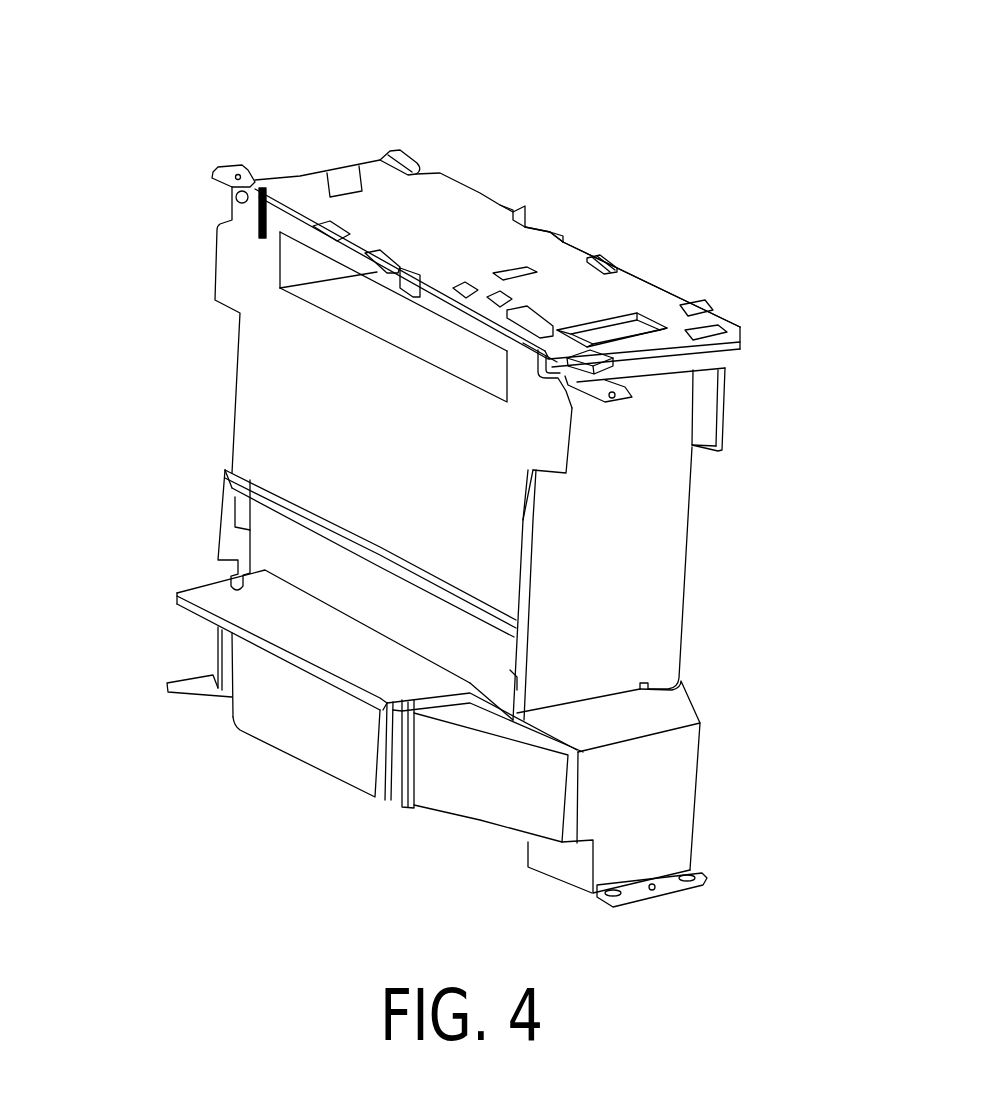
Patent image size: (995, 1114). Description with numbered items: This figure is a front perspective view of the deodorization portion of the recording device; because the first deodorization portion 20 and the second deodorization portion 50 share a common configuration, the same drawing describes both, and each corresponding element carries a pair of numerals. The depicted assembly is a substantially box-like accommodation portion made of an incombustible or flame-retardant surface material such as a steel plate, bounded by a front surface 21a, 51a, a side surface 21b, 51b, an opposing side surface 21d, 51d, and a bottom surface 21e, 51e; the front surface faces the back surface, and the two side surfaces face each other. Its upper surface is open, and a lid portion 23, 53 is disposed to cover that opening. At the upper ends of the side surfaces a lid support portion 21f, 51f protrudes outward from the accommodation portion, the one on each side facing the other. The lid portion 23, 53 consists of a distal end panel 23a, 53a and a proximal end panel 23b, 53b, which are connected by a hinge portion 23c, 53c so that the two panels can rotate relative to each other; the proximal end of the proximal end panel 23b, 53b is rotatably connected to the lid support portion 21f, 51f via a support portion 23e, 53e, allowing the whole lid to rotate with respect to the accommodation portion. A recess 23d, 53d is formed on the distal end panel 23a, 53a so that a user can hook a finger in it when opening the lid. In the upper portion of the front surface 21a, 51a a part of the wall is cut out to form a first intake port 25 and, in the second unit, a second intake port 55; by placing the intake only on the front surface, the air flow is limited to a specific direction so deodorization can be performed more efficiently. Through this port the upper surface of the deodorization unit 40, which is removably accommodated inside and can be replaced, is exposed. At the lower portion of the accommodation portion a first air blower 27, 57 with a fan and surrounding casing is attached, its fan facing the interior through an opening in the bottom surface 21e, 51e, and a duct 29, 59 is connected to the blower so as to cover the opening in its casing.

The first deodorization portion 20 is at (461, 454).
The second deodorization portion 50 is at (220, 126).
The front surface 21a is at (317, 453).
The front surface 51a is at (260, 400).
The side surface 21b is at (687, 540).
The side surface 51b is at (667, 480).
The side surface 21d is at (154, 565).
The side surface 51d is at (232, 445).
The bottom surface 21e is at (752, 713).
The bottom surface 51e is at (677, 694).
The lid support portion 21f is at (299, 156).
The lid support portion 51f is at (258, 187).
The lid portion 23 is at (522, 204).
The lid portion 53 is at (790, 44).
The distal end panel 23a is at (677, 188).
The distal end panel 53a is at (637, 267).
The proximal end panel 23b is at (566, 138).
The proximal end panel 53b is at (500, 225).
The hinge portion 23c is at (595, 192).
The hinge portion 53c is at (553, 260).
The recess 23d is at (668, 277).
The recess 53d is at (663, 316).
The support portion 23e is at (163, 179).
The support portion 53e is at (232, 193).
The first intake port 25 is at (393, 370).
The second intake port 55 is at (400, 363).
The first air blower 27 is at (323, 702).
The second air blower 57 is at (310, 741).
The duct 29 is at (547, 795).
The duct 59 is at (533, 803).
The deodorization unit 40 is at (377, 310).